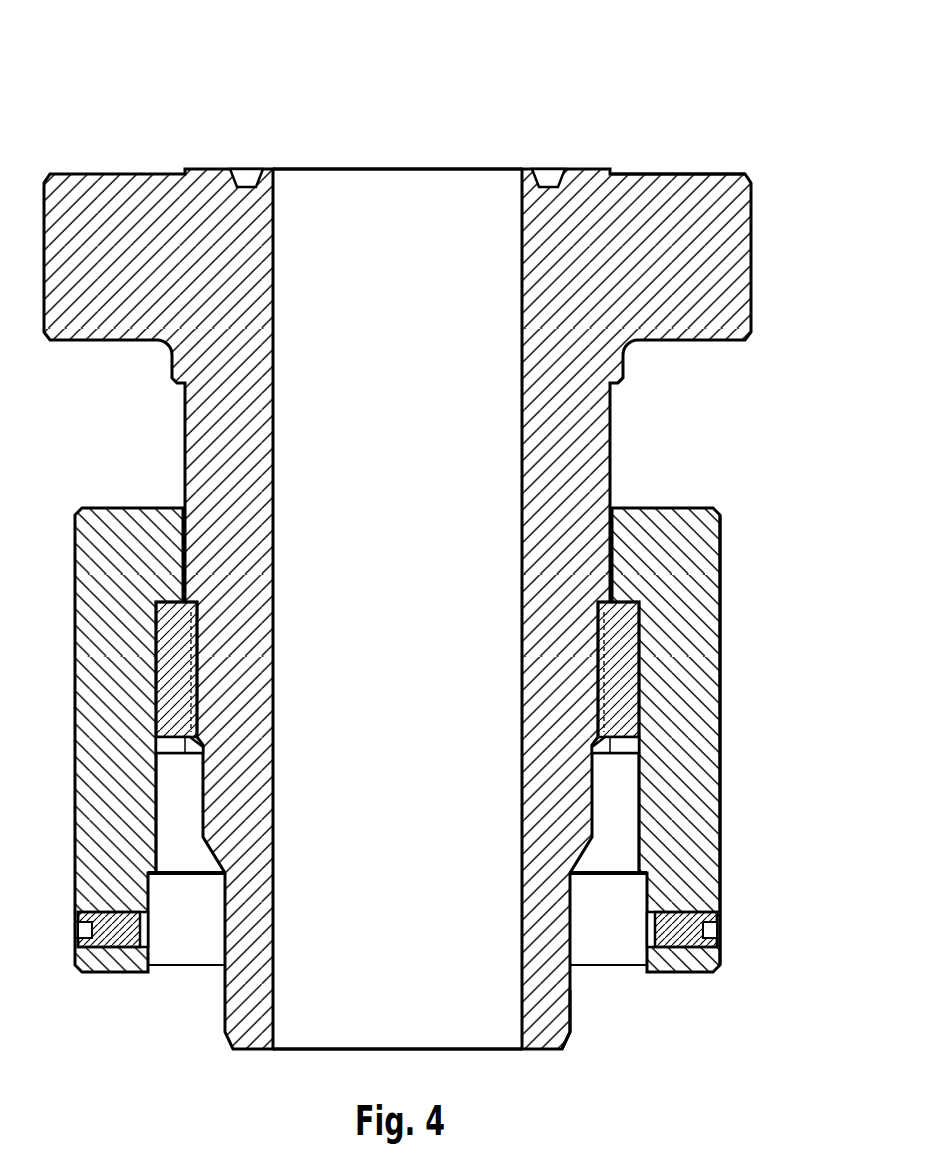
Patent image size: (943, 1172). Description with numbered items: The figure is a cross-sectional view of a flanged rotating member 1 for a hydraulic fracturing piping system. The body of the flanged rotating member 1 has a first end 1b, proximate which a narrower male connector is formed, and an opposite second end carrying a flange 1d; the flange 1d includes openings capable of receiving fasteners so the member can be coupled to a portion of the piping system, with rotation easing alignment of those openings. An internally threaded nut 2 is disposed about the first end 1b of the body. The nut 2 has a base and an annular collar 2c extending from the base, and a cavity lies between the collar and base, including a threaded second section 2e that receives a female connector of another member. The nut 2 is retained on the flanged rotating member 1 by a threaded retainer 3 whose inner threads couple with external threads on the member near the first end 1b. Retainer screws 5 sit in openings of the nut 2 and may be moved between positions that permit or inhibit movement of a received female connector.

The flanged rotating member 1 is at (707, 235).
The flange 1d is at (665, 100).
The first end 1b is at (640, 1046).
The internally threaded nut 2 is at (693, 568).
The annular collar 2c is at (734, 740).
The second section 2e is at (397, 952).
The threaded retainer 3 is at (617, 672).
The retainer screw 5 is at (118, 934).